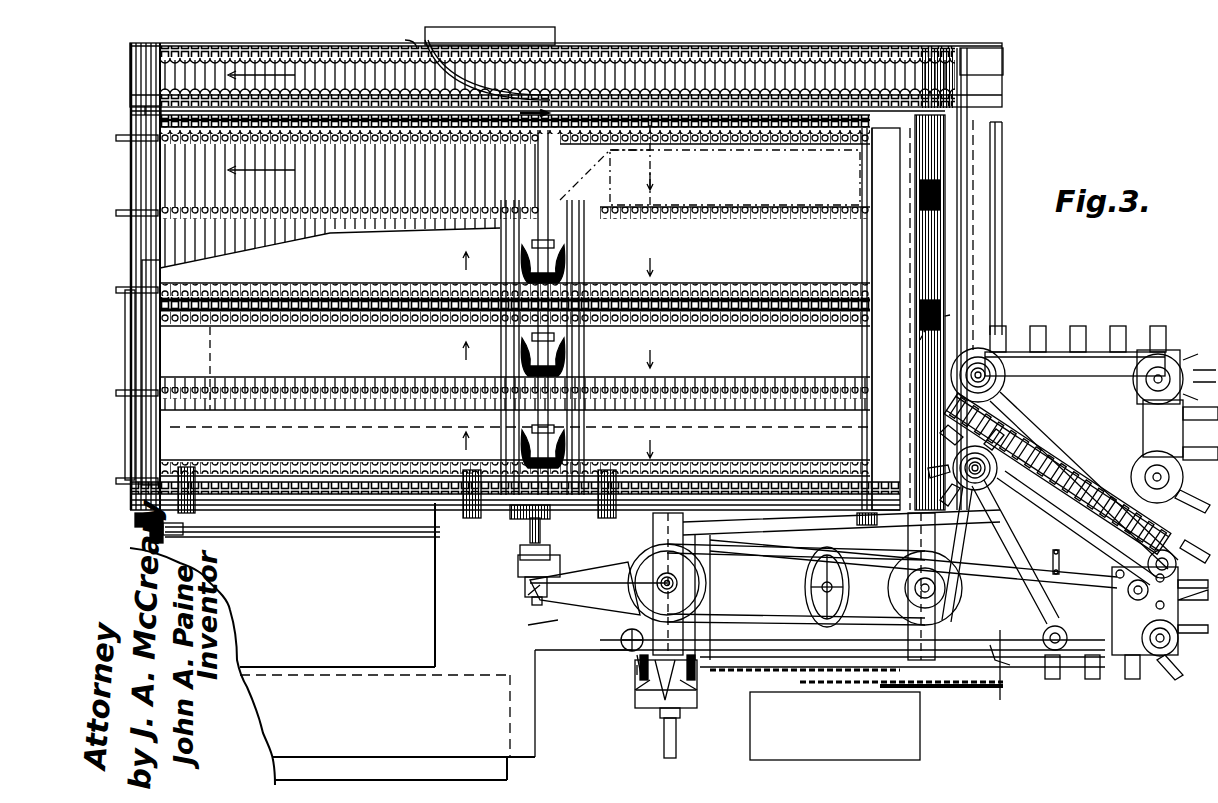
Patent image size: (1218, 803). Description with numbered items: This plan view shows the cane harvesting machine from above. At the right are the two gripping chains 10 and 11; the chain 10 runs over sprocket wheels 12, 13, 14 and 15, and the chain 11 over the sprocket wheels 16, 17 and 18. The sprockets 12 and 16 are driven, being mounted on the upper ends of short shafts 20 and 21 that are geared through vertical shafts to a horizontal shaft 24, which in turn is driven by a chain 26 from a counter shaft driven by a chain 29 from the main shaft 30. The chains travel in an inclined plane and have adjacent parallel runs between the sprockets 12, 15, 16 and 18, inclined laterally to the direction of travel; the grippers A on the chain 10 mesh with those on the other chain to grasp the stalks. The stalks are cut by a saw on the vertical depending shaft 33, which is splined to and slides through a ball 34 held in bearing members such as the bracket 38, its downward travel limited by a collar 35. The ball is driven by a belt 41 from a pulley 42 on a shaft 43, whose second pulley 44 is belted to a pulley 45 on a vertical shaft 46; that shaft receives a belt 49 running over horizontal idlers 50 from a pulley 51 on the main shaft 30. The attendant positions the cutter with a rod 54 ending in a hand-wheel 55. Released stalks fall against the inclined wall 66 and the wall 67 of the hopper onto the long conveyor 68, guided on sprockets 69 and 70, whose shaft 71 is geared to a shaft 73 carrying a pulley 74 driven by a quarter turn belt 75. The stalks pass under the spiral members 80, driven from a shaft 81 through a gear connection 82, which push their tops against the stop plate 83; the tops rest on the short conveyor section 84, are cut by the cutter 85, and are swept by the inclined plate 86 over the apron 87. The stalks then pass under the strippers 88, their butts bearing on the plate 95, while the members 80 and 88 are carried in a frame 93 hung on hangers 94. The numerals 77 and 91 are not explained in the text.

The chain 10 is at (1055, 560).
The chain 11 is at (1045, 356).
The sprocket wheel 12 is at (985, 488).
The sprocket wheel 13 is at (1048, 648).
The sprocket wheel 14 is at (1155, 655).
The sprocket wheel 15 is at (1168, 552).
The sprocket wheel 16 is at (990, 383).
The sprocket wheel 17 is at (1140, 383).
The sprocket wheel 18 is at (1140, 462).
The short shaft 20 is at (1010, 412).
The short shaft 21 is at (985, 380).
The horizontal shaft 24 is at (1000, 660).
The chain 26 is at (935, 690).
The chain 29 is at (740, 668).
The main shaft 30 is at (680, 712).
The vertical depending shaft 33 is at (1125, 547).
The ball 34 is at (857, 520).
The collar 35 is at (1148, 590).
The bracket or bearing member 38 is at (1130, 615).
The belt 41 is at (1020, 560).
The pulley 42 is at (830, 595).
The shaft 43 is at (920, 575).
The pulley 44 is at (895, 614).
The pulley 45 is at (690, 578).
The vertical shaft 46 is at (598, 588).
The belt 49 is at (640, 660).
The horizontal idlers 50 is at (666, 684).
The pulley 51 is at (640, 692).
The rod 54 is at (1020, 648).
The hand-wheel 55 is at (815, 548).
The inclined wall 66 is at (892, 228).
The wall 67 is at (975, 234).
The conveyor 68 is at (150, 165).
The sprockets 69 is at (945, 112).
The sprockets 70 is at (145, 300).
The shaft 71 is at (145, 108).
The shaft 73 is at (606, 175).
The pulley 74 is at (530, 602).
The quarter turn belt 75 is at (568, 595).
The guide rail 77 is at (397, 288).
The spiral members 80 is at (515, 286).
The shaft 81 is at (548, 232).
The gear connection 82 is at (575, 520).
The stop plate 83 is at (795, 45).
The short conveyor section 84 is at (945, 85).
The cutter 85 is at (550, 112).
The inclined plate 86 is at (391, 36).
The apron 87 is at (555, 33).
The strippers 88 is at (515, 352).
The bracket 91 is at (960, 58).
The frame 93 is at (142, 270).
The hinges or hangers 94 is at (190, 515).
The plate 95 is at (285, 507).
The cane grippers A is at (1085, 660).